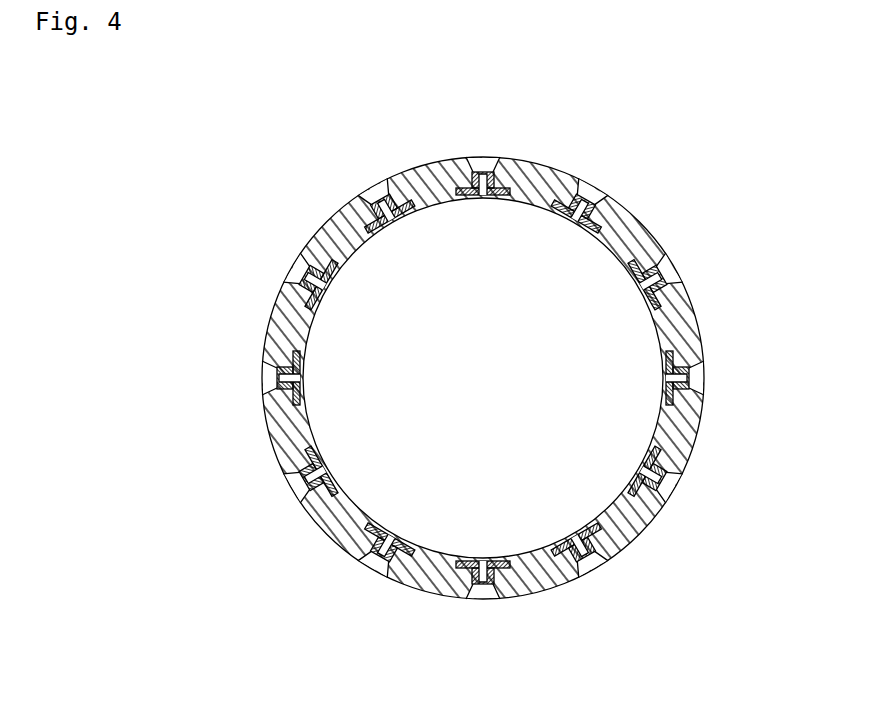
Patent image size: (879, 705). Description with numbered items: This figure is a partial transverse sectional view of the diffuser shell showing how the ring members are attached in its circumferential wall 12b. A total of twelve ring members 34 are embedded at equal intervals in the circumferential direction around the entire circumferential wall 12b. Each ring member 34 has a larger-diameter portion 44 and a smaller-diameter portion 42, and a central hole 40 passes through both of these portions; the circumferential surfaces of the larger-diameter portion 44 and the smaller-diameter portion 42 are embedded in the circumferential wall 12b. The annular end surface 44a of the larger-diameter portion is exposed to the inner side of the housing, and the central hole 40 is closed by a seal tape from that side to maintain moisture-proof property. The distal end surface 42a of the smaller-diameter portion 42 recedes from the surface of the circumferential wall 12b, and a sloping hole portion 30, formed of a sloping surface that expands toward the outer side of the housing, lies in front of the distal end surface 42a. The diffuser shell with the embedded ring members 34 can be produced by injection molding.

The circumferential wall 12b is at (630, 227).
The central hole 40 is at (483, 190).
The smaller-diameter portion 42 is at (336, 248).
The larger-diameter portion 44 is at (333, 268).
The sloping hole portion 30 is at (270, 384).
The ring member 34 is at (658, 396).
The distal end surface 42a is at (317, 493).
The annular end surface 44a is at (367, 472).